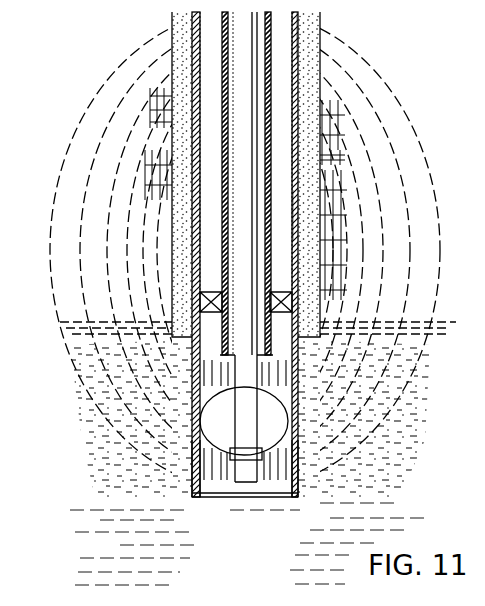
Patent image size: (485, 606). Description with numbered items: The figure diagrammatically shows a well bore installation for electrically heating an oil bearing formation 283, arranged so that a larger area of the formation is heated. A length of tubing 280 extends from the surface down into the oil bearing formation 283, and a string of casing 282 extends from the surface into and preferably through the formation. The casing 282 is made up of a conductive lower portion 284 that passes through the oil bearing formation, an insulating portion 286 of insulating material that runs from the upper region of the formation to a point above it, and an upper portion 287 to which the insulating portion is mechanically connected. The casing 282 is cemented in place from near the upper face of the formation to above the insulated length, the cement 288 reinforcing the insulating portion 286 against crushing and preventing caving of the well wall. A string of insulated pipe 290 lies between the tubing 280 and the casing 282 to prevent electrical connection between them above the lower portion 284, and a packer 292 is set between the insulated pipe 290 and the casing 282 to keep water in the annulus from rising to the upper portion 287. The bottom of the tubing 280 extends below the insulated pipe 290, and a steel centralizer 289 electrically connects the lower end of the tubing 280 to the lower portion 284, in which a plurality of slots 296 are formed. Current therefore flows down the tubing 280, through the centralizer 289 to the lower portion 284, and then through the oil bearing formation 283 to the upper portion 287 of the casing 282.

The tubing 280 is at (252, 106).
The casing 282 is at (297, 127).
The oil bearing formation 283 is at (411, 357).
The lower portion of casing 284 is at (193, 347).
The insulating portion of casing 286 is at (293, 217).
The upper portion of casing 287 is at (297, 58).
The cement 288 is at (317, 158).
The centralizer 289 is at (288, 418).
The insulated pipe 290 is at (267, 272).
The packer 292 is at (289, 301).
The slots 296 is at (298, 465).